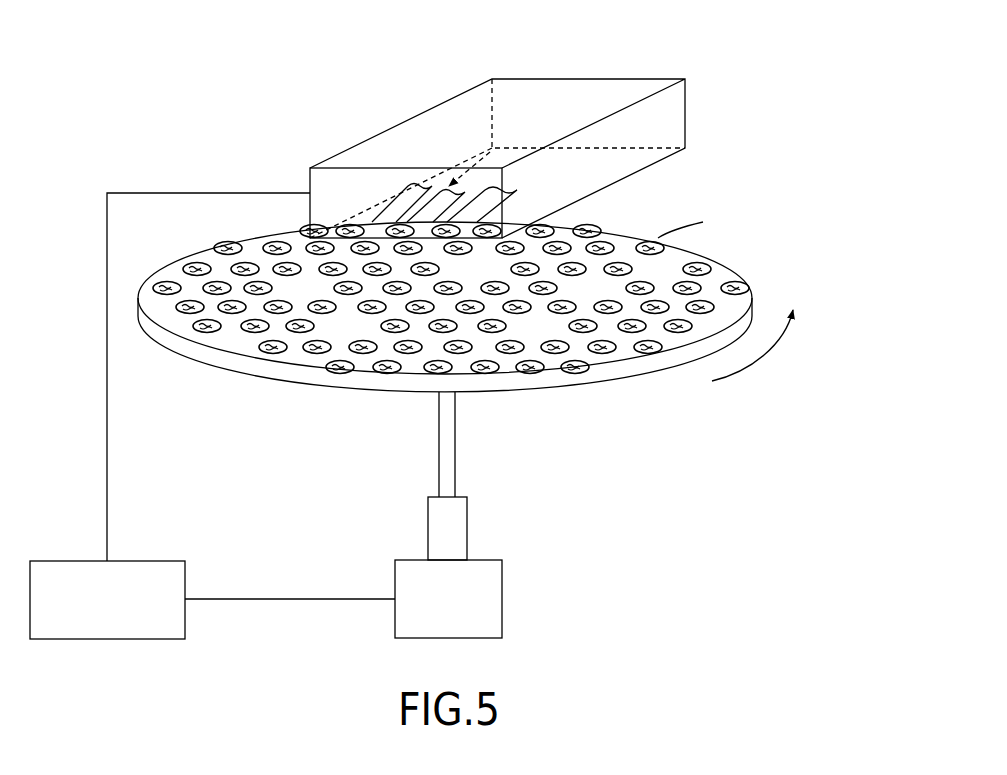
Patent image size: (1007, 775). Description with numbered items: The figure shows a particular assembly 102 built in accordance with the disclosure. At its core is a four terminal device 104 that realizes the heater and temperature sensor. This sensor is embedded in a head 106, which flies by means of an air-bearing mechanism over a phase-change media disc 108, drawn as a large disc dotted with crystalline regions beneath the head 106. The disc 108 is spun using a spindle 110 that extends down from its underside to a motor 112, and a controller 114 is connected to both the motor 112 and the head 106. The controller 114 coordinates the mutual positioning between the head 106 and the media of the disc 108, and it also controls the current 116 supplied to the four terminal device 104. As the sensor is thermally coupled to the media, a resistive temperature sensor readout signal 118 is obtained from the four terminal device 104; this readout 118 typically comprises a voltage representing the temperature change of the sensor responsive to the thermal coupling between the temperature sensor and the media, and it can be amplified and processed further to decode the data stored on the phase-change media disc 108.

The assembly 102 is at (138, 98).
The four terminal device 104 is at (402, 183).
The head 106 is at (525, 103).
The phase-change media disc 108 is at (631, 371).
The spindle 110 is at (437, 442).
The motor 112 is at (492, 560).
The controller 114 is at (160, 560).
The current 116 is at (393, 190).
The resistive temperature sensor readout signal 118 is at (470, 214).